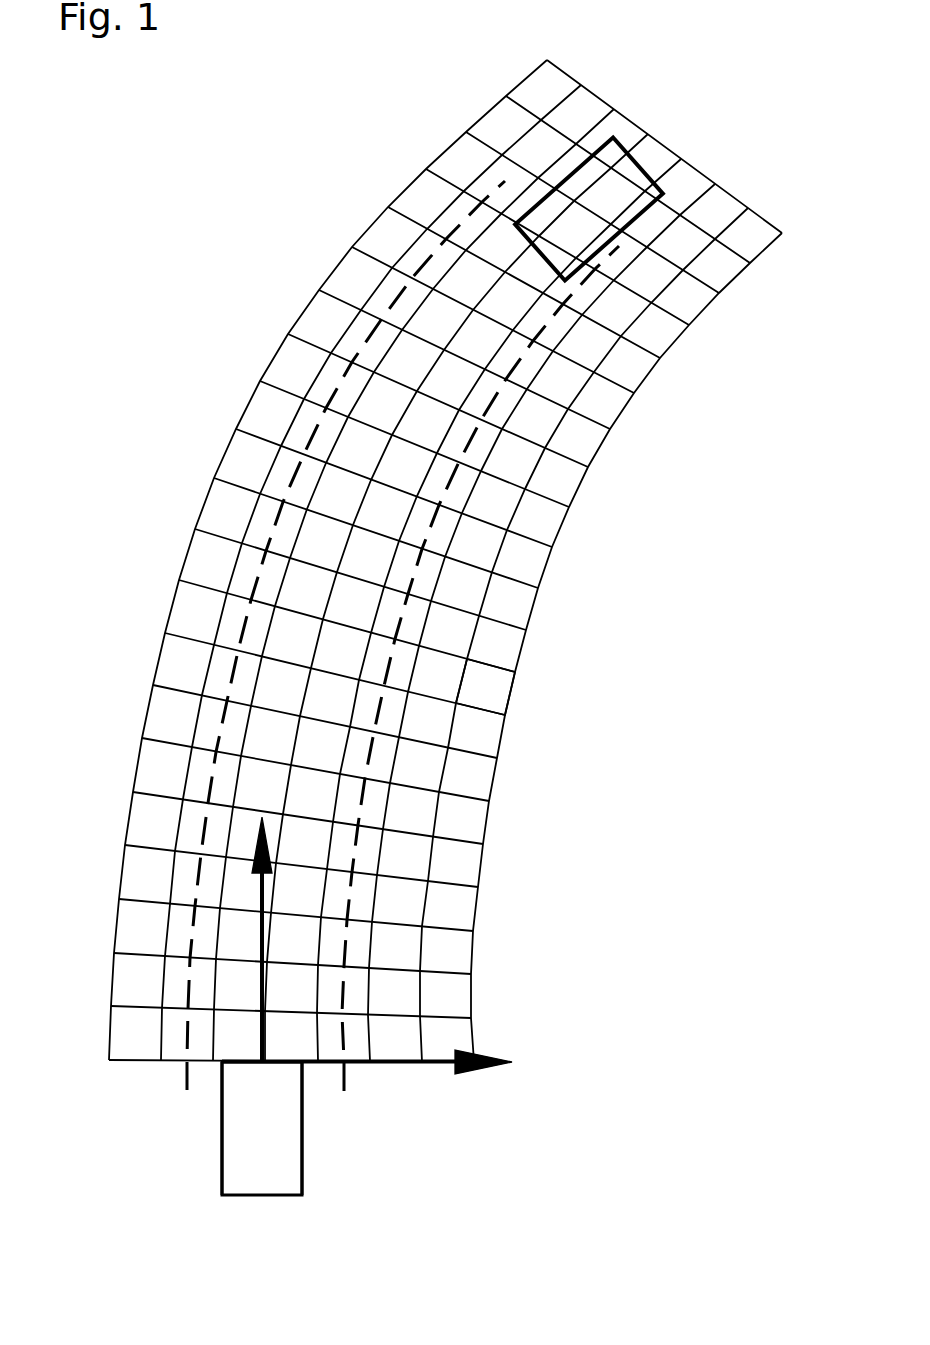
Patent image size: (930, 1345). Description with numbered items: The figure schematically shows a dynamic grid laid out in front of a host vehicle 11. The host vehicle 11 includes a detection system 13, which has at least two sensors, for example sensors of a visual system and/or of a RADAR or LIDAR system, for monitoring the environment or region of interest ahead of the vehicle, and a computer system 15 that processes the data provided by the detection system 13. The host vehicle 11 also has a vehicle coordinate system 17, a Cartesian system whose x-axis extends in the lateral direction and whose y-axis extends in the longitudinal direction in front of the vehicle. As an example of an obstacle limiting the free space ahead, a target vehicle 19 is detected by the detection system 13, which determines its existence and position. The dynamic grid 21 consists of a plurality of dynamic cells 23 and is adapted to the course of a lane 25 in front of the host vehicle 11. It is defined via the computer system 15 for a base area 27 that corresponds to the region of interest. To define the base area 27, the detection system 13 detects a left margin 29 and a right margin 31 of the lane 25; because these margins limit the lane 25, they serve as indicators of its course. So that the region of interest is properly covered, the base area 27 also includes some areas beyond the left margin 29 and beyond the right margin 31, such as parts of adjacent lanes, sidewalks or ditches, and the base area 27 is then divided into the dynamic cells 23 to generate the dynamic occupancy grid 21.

The host vehicle 11 is at (285, 1170).
The detection system 13 is at (235, 1090).
The computer system 15 is at (287, 1095).
The vehicle coordinate system 17 is at (492, 1092).
The target vehicle 19 is at (617, 183).
The dynamic grid 21 is at (445, 545).
The dynamic cells 23 is at (499, 656).
The lane 25 is at (413, 411).
The base area 27 is at (475, 117).
The left margin 29 is at (280, 441).
The right margin 31 is at (445, 500).